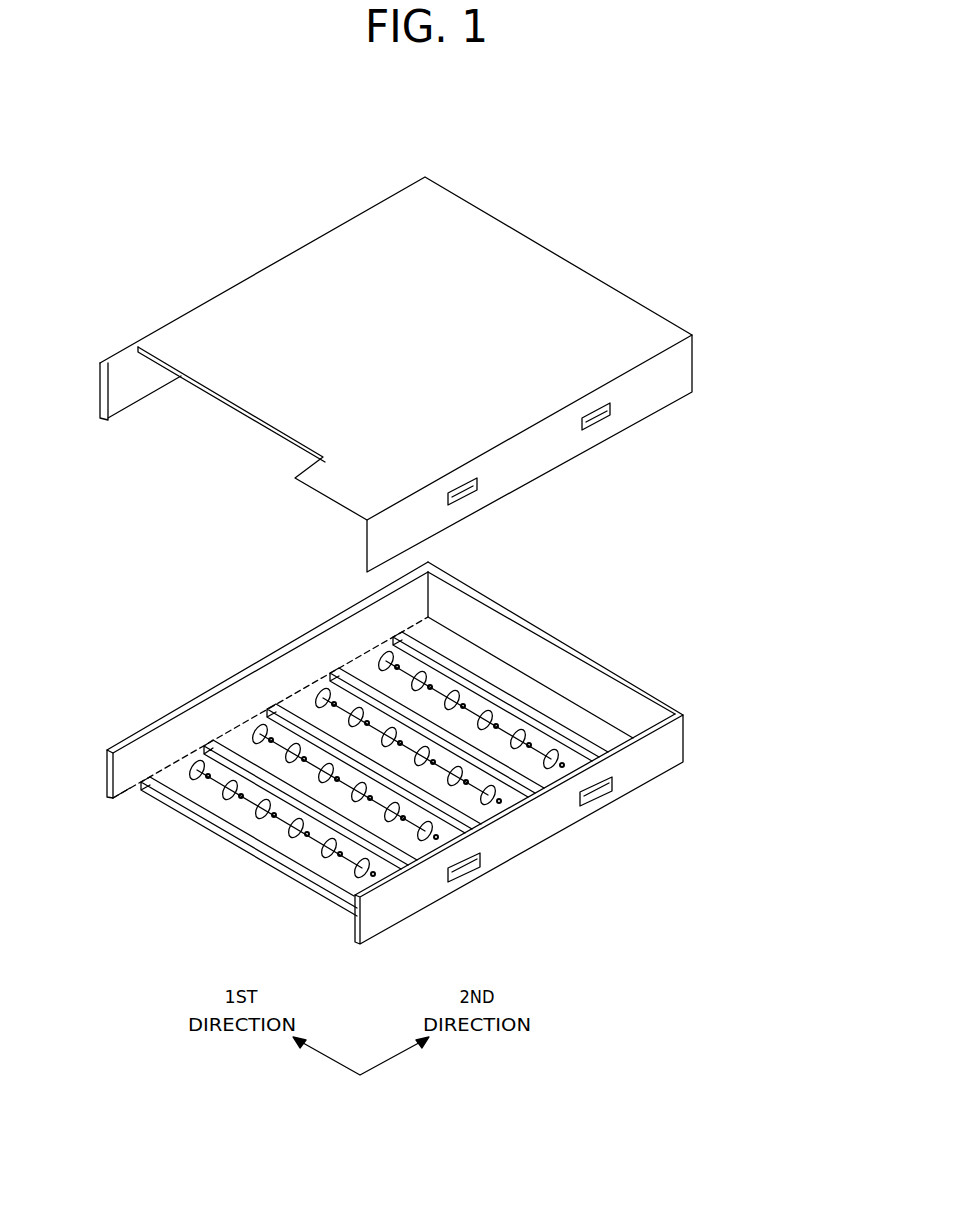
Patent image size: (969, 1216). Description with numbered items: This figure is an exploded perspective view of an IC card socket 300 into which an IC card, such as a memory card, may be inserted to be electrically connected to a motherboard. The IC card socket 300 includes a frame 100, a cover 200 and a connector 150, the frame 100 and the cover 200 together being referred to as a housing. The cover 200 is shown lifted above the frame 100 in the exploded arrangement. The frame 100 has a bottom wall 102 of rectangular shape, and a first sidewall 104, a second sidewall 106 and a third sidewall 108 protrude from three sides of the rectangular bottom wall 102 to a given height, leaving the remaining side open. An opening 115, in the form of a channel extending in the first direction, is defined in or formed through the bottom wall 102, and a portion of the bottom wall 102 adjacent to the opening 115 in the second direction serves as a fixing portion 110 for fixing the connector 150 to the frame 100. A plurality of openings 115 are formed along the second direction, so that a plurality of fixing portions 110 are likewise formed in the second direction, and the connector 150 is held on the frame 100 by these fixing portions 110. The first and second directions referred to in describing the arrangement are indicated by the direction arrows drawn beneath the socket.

The frame 100 is at (437, 747).
The bottom wall 102 is at (522, 680).
The first sidewall 104 is at (408, 603).
The second sidewall 106 is at (546, 799).
The third sidewall 108 is at (597, 693).
The fixing portion 110 is at (338, 872).
The opening 115 is at (583, 745).
The connector 150 is at (190, 760).
The cover 200 is at (693, 359).
The IC card socket 300 is at (768, 750).